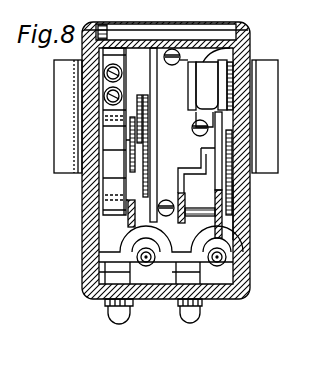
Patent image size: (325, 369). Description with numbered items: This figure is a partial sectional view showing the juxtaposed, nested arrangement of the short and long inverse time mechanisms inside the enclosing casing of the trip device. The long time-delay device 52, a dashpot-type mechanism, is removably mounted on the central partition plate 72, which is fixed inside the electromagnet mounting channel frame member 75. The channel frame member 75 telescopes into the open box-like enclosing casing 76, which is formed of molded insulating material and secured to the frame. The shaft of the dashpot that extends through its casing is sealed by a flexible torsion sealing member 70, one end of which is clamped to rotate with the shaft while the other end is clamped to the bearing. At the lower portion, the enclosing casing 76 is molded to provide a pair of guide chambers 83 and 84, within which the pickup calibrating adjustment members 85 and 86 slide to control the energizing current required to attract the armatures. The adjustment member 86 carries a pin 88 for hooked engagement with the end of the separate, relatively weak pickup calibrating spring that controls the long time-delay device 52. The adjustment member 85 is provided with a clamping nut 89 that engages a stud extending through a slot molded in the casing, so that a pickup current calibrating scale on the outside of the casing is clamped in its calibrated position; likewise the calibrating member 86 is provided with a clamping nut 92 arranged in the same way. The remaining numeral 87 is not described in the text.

The long time-delay device 52 is at (162, 77).
The flexible torsion sealing member 70 is at (247, 40).
The central partition plate 72 is at (157, 133).
The electromagnet mounting channel frame member 75 is at (176, 40).
The enclosing casing 76 is at (251, 204).
The guide chamber 83 is at (122, 240).
The guide chamber 84 is at (195, 240).
The pickup calibrating adjustment member 85 is at (116, 272).
The pickup calibrating adjustment member 86 is at (176, 305).
The foot 87 is at (150, 300).
The pin 88 is at (248, 241).
The clamping nut 89 is at (108, 316).
The clamping nut 92 is at (202, 313).